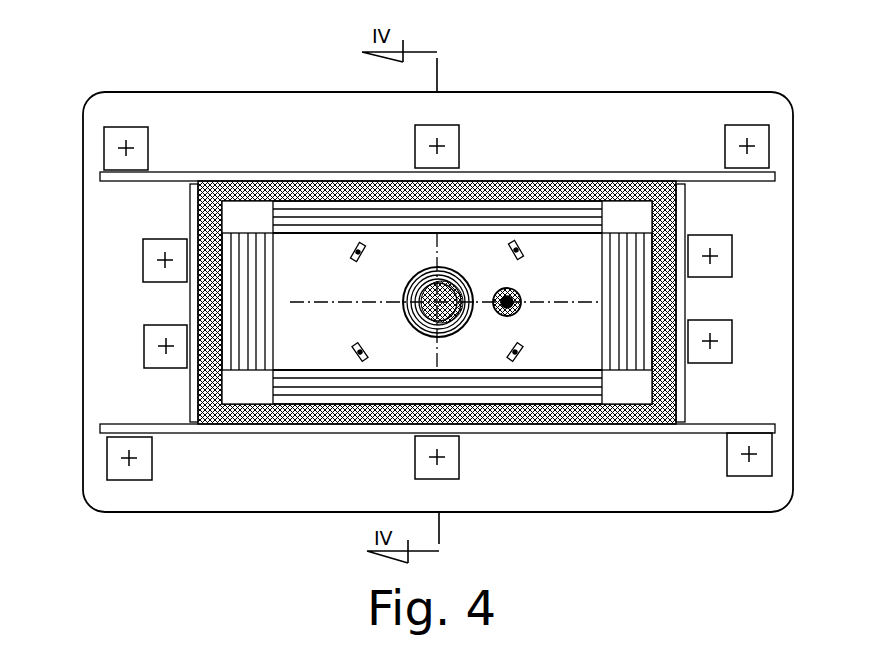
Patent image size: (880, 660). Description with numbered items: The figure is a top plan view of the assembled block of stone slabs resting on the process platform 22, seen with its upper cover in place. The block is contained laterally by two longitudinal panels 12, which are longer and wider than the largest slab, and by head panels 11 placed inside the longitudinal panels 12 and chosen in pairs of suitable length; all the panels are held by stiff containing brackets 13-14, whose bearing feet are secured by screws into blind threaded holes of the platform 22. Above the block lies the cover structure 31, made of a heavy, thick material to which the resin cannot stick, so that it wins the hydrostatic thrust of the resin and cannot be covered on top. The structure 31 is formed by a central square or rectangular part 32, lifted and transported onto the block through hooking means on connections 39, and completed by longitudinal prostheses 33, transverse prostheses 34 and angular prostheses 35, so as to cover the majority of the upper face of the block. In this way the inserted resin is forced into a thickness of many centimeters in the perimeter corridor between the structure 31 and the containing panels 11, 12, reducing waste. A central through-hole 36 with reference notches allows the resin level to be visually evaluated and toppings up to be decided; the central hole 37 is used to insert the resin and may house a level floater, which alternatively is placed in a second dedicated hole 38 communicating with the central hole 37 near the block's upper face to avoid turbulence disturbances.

The containing brackets 13-14 is at (113, 135).
The head panels 11 is at (194, 210).
The longitudinal panels 12 is at (237, 175).
The process platform 22 is at (239, 112).
The central through-hole 36 is at (410, 292).
The connections 39 is at (517, 252).
The central hole 37 is at (508, 294).
The second dedicated hole 38 is at (520, 295).
The structure 31 is at (363, 332).
The central part 32 is at (532, 350).
The longitudinal prostheses 33 is at (565, 391).
The angular prostheses 35 is at (622, 386).
The transverse prostheses 34 is at (643, 345).